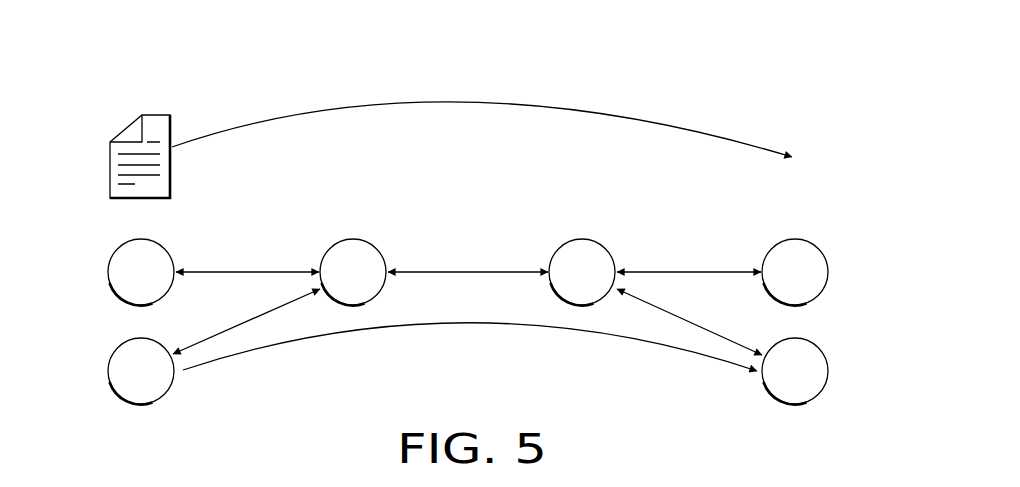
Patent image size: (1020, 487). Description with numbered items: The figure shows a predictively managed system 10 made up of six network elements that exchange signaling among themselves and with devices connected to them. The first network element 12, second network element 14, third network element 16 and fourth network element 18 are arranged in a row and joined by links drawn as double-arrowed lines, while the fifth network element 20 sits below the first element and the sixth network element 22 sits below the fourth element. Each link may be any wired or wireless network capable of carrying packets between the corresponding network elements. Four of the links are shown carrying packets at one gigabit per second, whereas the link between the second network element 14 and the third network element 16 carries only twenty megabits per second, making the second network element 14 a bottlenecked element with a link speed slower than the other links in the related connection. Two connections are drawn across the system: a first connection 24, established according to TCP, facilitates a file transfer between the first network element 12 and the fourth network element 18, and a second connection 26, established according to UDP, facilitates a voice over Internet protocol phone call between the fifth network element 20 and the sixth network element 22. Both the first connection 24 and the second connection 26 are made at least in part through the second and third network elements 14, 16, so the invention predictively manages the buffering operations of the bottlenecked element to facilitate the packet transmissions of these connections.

The predictively managed system 10 is at (738, 59).
The first network element 12 is at (108, 272).
The second network element 14 is at (353, 239).
The third network element 16 is at (582, 239).
The fourth network element 18 is at (828, 272).
The fifth network element 20 is at (108, 371).
The sixth network element 22 is at (828, 371).
The first connection 24 is at (545, 103).
The second connection 26 is at (425, 327).